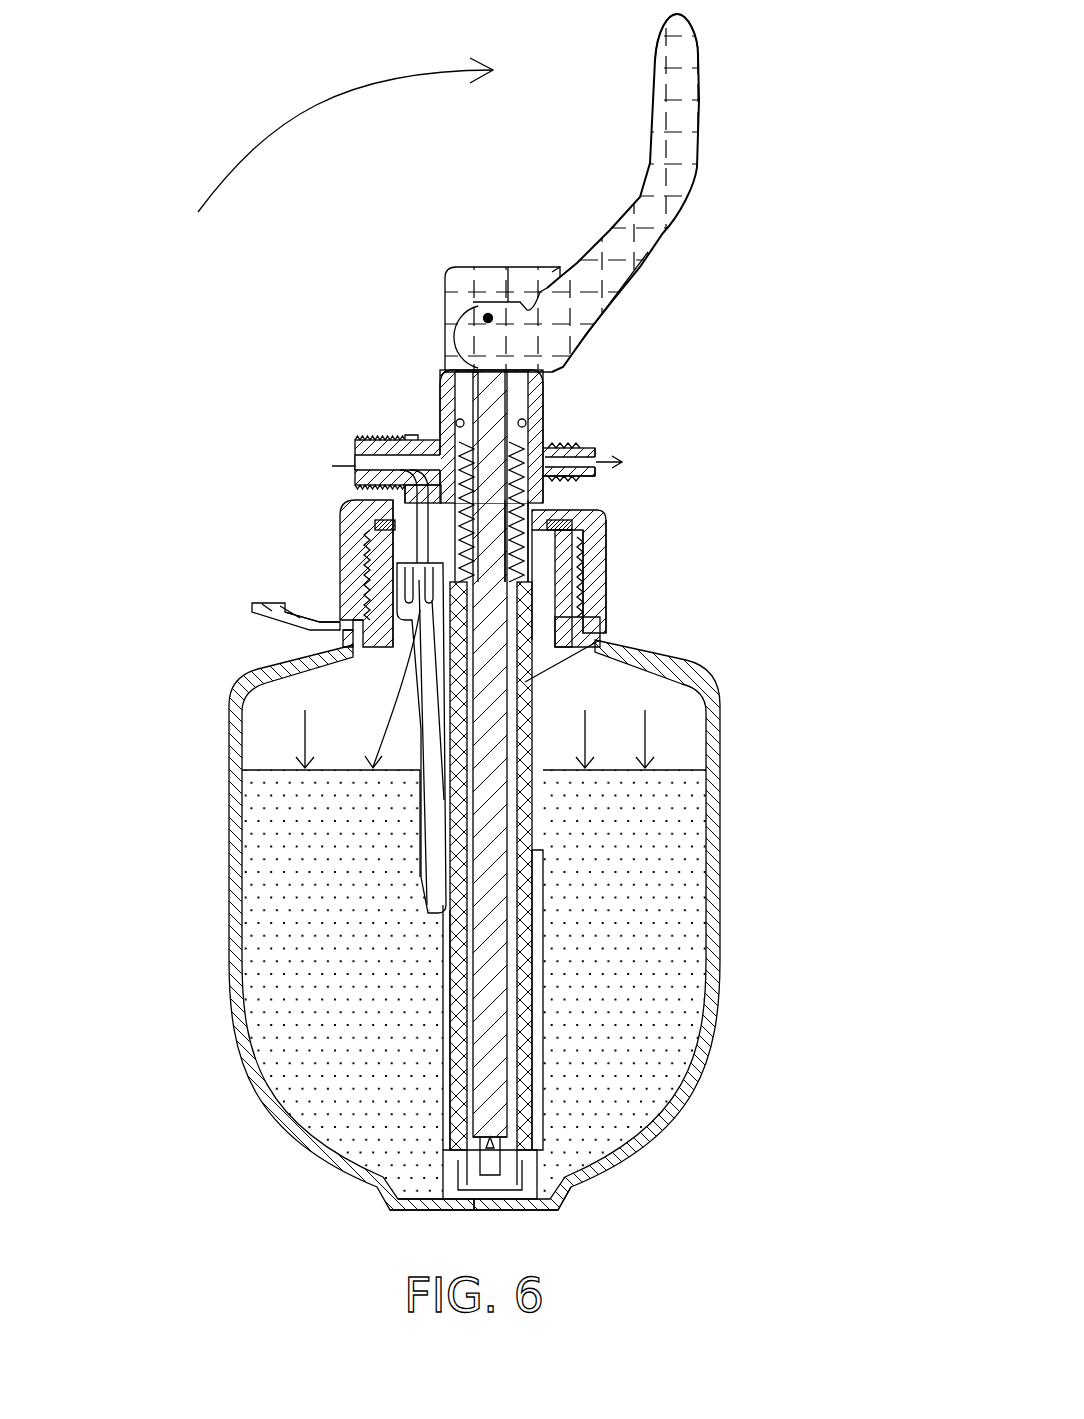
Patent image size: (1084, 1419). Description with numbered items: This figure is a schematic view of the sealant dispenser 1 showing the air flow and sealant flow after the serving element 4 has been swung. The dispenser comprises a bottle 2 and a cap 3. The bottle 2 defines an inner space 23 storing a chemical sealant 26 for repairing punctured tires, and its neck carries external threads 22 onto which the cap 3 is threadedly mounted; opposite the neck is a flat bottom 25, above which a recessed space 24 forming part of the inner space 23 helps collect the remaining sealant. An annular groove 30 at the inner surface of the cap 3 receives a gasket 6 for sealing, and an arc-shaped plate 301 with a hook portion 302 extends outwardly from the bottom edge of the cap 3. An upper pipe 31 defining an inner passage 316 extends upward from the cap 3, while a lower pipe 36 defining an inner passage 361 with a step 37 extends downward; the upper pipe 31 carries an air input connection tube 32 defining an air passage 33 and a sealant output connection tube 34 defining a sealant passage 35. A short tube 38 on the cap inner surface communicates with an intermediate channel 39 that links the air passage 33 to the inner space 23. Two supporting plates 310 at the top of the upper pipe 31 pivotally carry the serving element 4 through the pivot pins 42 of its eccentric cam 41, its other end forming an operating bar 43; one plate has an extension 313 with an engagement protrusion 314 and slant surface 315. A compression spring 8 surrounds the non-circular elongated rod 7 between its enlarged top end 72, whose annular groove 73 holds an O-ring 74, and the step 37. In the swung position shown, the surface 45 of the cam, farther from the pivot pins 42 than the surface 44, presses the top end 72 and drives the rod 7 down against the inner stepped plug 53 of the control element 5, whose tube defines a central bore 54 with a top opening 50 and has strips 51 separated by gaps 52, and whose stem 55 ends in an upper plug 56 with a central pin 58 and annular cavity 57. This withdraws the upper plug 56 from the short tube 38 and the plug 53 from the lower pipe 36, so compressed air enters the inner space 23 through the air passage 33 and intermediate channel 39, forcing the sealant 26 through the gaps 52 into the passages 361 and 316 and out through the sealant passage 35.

The sealant dispenser 1 is at (222, 322).
The bottle 2 is at (245, 1053).
The cap 3 is at (600, 597).
The serving element 4 is at (676, 218).
The control element 5 is at (440, 915).
The gasket 6 is at (575, 524).
The elongated rod 7 is at (492, 1035).
The compression spring 8 is at (545, 488).
The external threads 22 is at (583, 572).
The inner space 23 is at (663, 718).
The recessed space 24 is at (400, 1208).
The flat bottom 25 is at (568, 1205).
The chemical sealant 26 is at (318, 1100).
The annular groove 30 is at (350, 508).
The upper pipe 31 is at (535, 445).
The air input connection tube 32 is at (358, 443).
The air passage 33 is at (353, 460).
The sealant output connection tube 34 is at (580, 447).
The sealant passage 35 is at (597, 457).
The lower pipe 36 is at (607, 643).
The step 37 is at (610, 617).
The short tube 38 is at (365, 575).
The intermediate channel 39 is at (388, 528).
The eccentric cam 41 is at (468, 340).
The pivot pins 42 is at (465, 314).
The operating bar 43 is at (688, 58).
The surface 44 is at (489, 312).
The surface 45 is at (482, 392).
The top opening 50 is at (530, 852).
The strips 51 is at (540, 1142).
The gaps 52 is at (413, 1157).
The inner stepped plug 53 is at (560, 1180).
The central bore 54 is at (538, 967).
The stem 55 is at (428, 783).
The upper plug 56 is at (347, 620).
The annular cavity 57 is at (423, 595).
The central pin 58 is at (413, 610).
The top end 72 is at (473, 385).
The annular groove 73 is at (526, 420).
The O-ring 74 is at (536, 420).
The arc-shaped plate 301 is at (330, 625).
The hook portion 302 is at (253, 615).
The supporting plates 310 is at (460, 278).
The extension 313 is at (570, 340).
The engagement protrusion 314 is at (556, 268).
The slant surface 315 is at (530, 268).
The inner passage 316 is at (595, 480).
The inner passage 361 is at (512, 915).